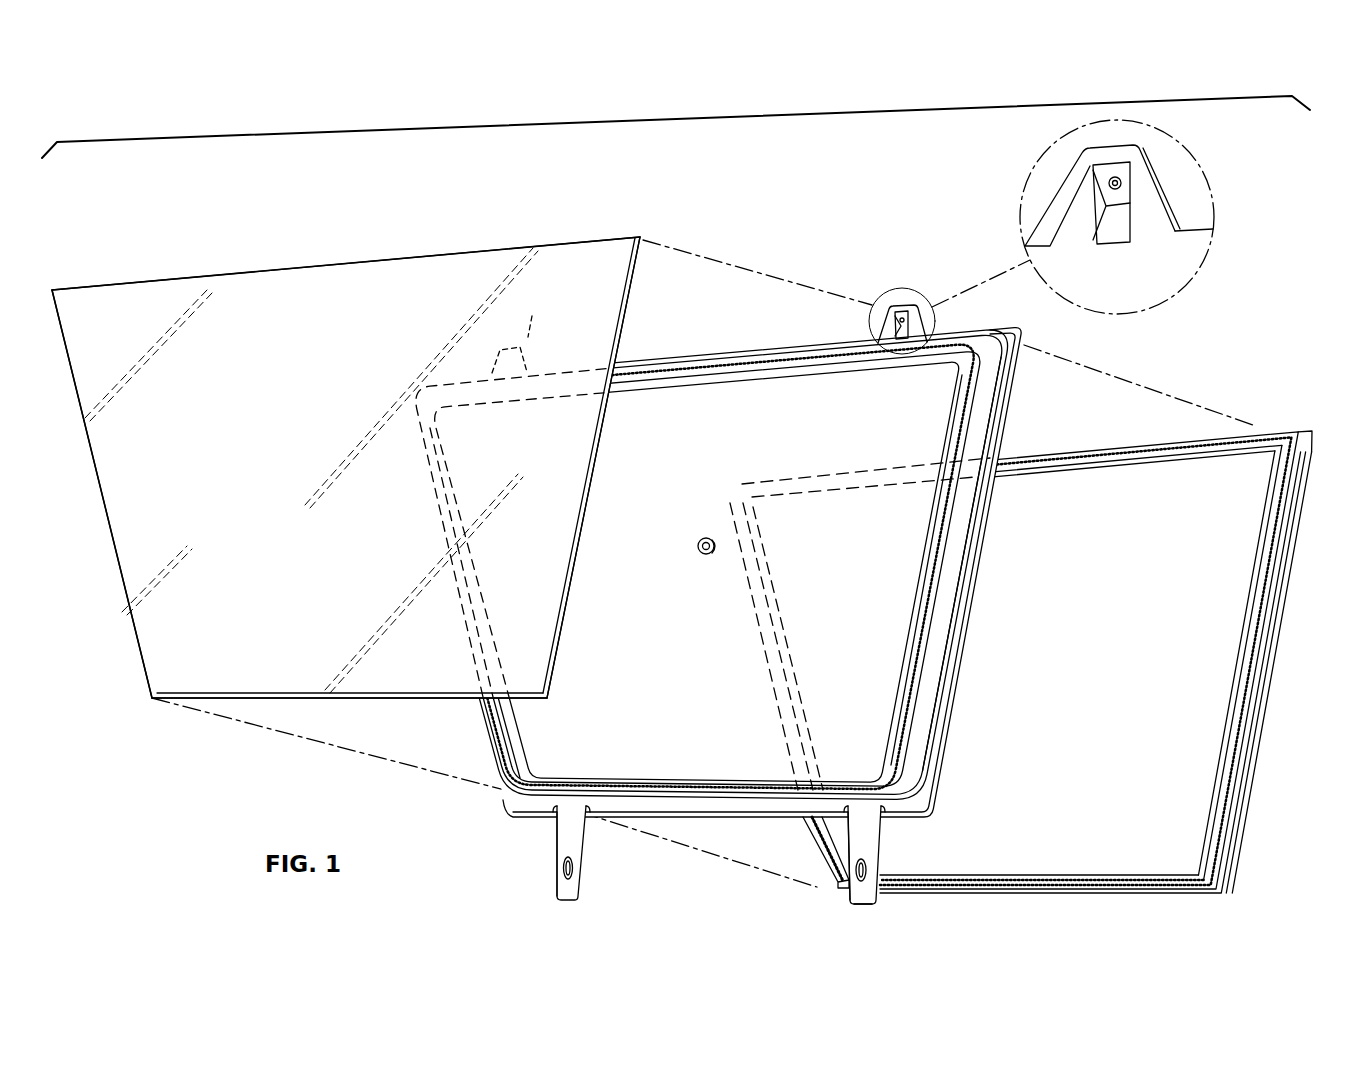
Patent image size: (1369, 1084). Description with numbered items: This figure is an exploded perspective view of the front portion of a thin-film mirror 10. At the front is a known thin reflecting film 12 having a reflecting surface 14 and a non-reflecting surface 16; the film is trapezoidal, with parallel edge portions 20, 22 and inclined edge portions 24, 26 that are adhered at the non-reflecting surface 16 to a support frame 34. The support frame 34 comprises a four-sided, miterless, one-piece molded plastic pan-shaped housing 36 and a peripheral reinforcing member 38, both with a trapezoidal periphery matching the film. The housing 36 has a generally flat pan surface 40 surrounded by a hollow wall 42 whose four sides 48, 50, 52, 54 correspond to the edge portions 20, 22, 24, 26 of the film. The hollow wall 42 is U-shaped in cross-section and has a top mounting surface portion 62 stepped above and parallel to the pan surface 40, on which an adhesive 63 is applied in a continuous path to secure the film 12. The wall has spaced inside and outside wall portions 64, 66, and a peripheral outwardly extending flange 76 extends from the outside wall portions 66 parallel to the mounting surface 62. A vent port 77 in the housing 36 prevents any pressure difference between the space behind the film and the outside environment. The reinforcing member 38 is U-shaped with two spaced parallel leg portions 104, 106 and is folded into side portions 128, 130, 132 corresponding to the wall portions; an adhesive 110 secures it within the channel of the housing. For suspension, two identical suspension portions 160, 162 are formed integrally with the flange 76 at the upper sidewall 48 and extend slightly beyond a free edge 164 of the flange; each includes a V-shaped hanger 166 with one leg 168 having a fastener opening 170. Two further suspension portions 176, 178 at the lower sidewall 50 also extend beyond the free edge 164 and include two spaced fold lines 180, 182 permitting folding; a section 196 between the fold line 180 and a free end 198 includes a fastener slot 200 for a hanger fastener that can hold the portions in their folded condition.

The thin-film mirror 10 is at (880, 250).
The thin reflecting film 12 is at (183, 278).
The reflecting surface 14 is at (288, 282).
The non-reflecting surface 16 is at (340, 290).
The parallel edge portion 20 is at (486, 243).
The parallel edge portion 22 is at (395, 700).
The inclined edge portion 24 is at (594, 503).
The inclined edge portion 26 is at (118, 573).
The support frame 34 is at (1055, 452).
The pan-shaped housing 36 is at (728, 352).
The reinforcing member 38 is at (1148, 440).
The pan surface 40 is at (674, 647).
The hollow wall 42 is at (950, 648).
The upper sidewall 48 is at (775, 355).
The lower sidewall 50 is at (698, 802).
The side wall portion 52 is at (957, 569).
The side wall portion 54 is at (492, 751).
The top mounting surface portion 62 is at (673, 365).
The adhesive 63 is at (697, 383).
The inside wall portion 64 is at (927, 534).
The outside wall portion 66 is at (908, 740).
The flange 76 is at (1020, 334).
The vent port 77 is at (696, 549).
The leg portion 104 is at (1285, 582).
The leg portion 106 is at (1268, 612).
The adhesive 110 is at (1247, 682).
The side portion 128 is at (1112, 478).
The side portion 130 is at (1082, 872).
The side portion 132 is at (1228, 700).
The suspension portion 160 is at (511, 493).
The suspension portion 162 is at (910, 300).
The free edge 164 is at (955, 334).
The V-shaped hanger 166 is at (1100, 216).
The leg 168 is at (1094, 177).
The fastener opening 170 is at (1126, 180).
The suspension portion 176 is at (574, 900).
The suspension portion 178 is at (884, 902).
The fold line 180 is at (572, 836).
The fold line 182 is at (548, 816).
The section 196 is at (848, 884).
The free end 198 is at (858, 906).
The fastener slot 200 is at (578, 871).